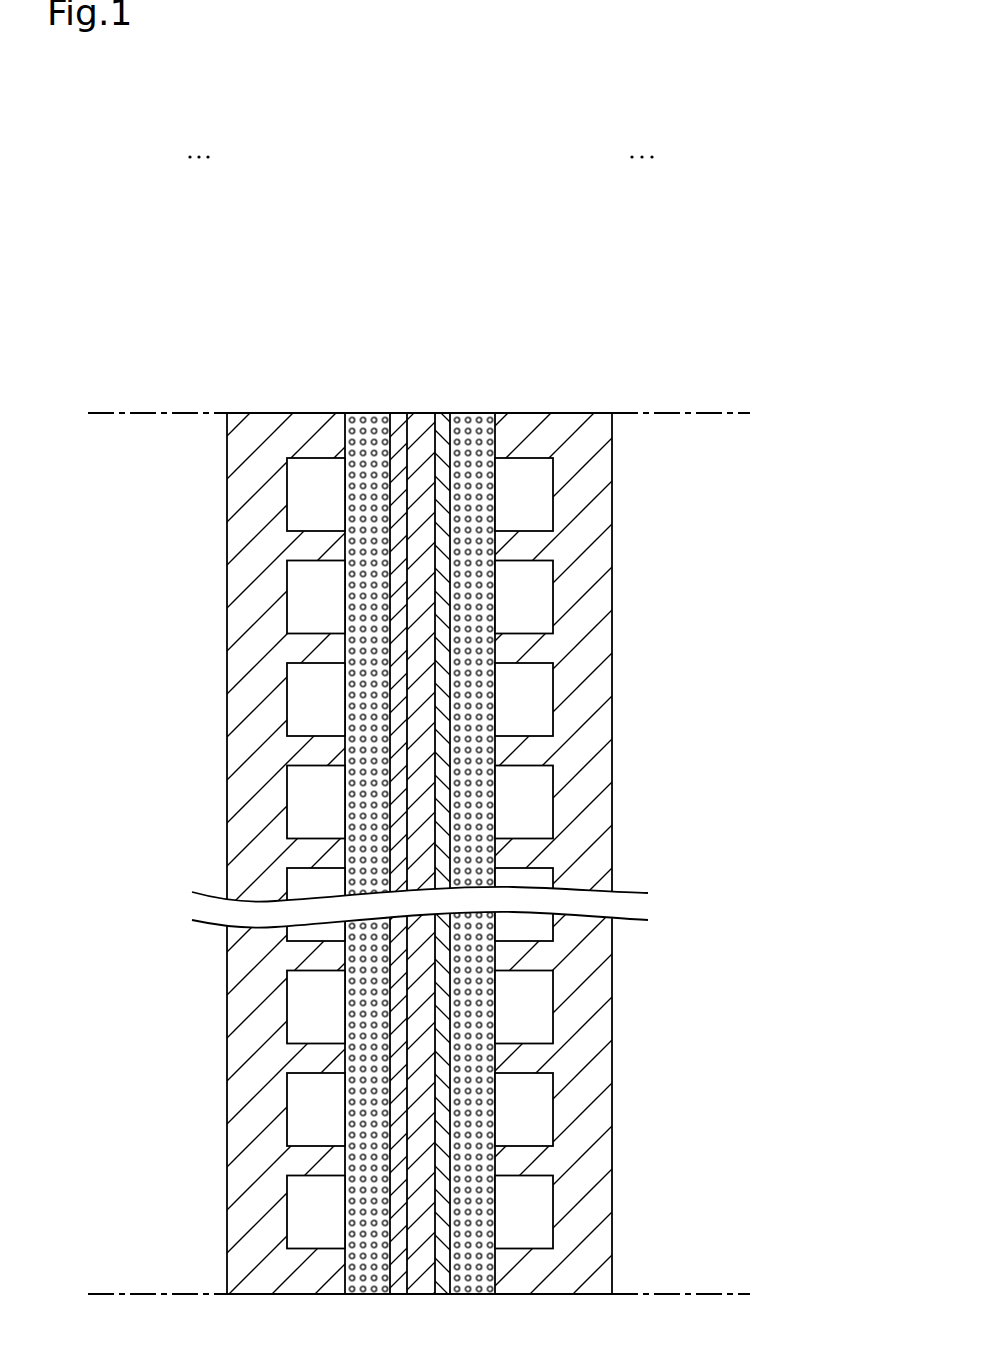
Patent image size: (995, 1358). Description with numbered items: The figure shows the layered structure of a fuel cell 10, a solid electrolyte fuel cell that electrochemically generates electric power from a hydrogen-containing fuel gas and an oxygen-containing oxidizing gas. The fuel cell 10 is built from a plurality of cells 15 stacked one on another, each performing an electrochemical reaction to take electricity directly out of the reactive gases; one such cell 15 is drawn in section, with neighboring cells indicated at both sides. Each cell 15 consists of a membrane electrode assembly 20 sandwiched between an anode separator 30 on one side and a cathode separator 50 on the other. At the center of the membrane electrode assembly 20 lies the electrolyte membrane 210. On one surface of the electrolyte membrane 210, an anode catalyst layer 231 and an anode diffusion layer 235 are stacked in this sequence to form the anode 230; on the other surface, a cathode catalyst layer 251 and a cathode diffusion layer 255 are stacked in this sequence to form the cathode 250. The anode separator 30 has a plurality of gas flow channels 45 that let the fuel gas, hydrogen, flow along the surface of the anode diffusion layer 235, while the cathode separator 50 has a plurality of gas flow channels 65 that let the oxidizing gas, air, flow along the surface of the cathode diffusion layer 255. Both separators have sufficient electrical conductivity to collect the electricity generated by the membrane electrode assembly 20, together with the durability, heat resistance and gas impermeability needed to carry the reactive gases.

The fuel cell 10 is at (622, 128).
The cell 15 is at (227, 201).
The membrane electrode assembly 20 is at (308, 283).
The anode separator 30 is at (273, 414).
The cathode separator 50 is at (560, 414).
The gas flow channels 45 is at (233, 855).
The gas flow channels 65 is at (608, 855).
The electrolyte membrane 210 is at (415, 414).
The anode 230 is at (293, 343).
The anode catalyst layer 231 is at (400, 414).
The anode diffusion layer 235 is at (362, 414).
The cathode 250 is at (443, 343).
The cathode catalyst layer 251 is at (442, 414).
The cathode diffusion layer 255 is at (473, 414).